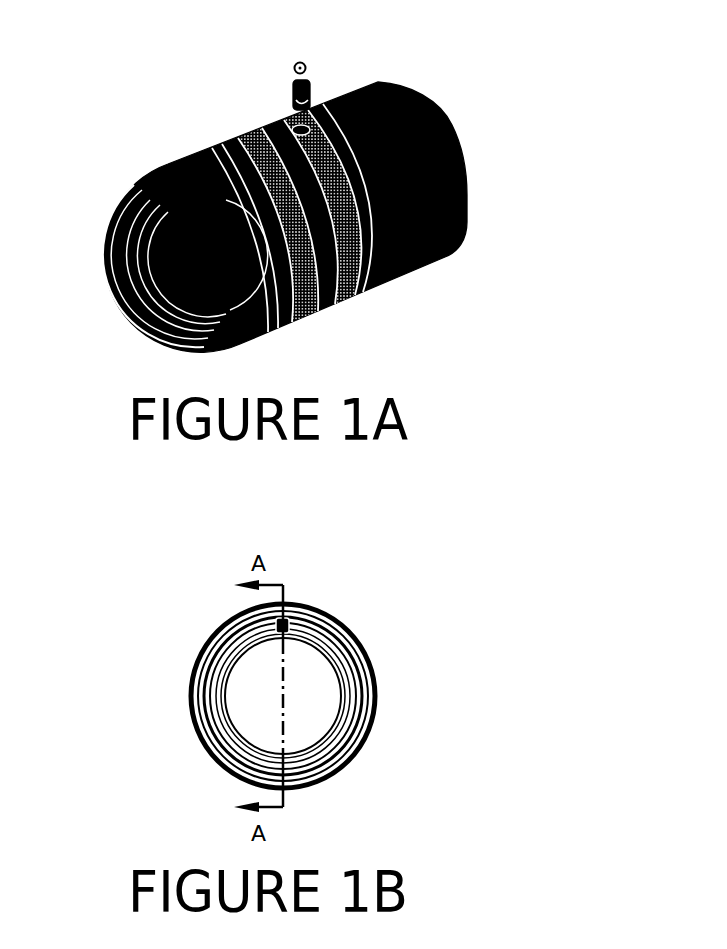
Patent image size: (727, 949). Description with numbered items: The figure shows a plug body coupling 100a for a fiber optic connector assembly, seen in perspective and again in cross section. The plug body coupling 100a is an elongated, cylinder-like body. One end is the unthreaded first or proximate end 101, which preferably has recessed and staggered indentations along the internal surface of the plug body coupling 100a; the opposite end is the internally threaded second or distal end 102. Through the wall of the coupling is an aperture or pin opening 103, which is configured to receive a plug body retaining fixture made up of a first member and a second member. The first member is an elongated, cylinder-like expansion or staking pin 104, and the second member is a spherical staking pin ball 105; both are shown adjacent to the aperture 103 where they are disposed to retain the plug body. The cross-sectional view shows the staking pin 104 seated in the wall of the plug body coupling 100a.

In FIG. 1A, the plug body coupling 100a is at (518, 86).
In FIG. 1B, the plug body coupling 100a is at (398, 593).
In FIG. 1A, the proximate end 101 is at (126, 313).
In FIG. 1A, the distal end 102 is at (455, 138).
In FIG. 1A, the aperture 103 is at (291, 124).
In FIG. 1A, the staking pin 104 is at (291, 91).
In FIG. 1B, the staking pin 104 is at (268, 621).
In FIG. 1A, the staking pin ball 105 is at (307, 64).